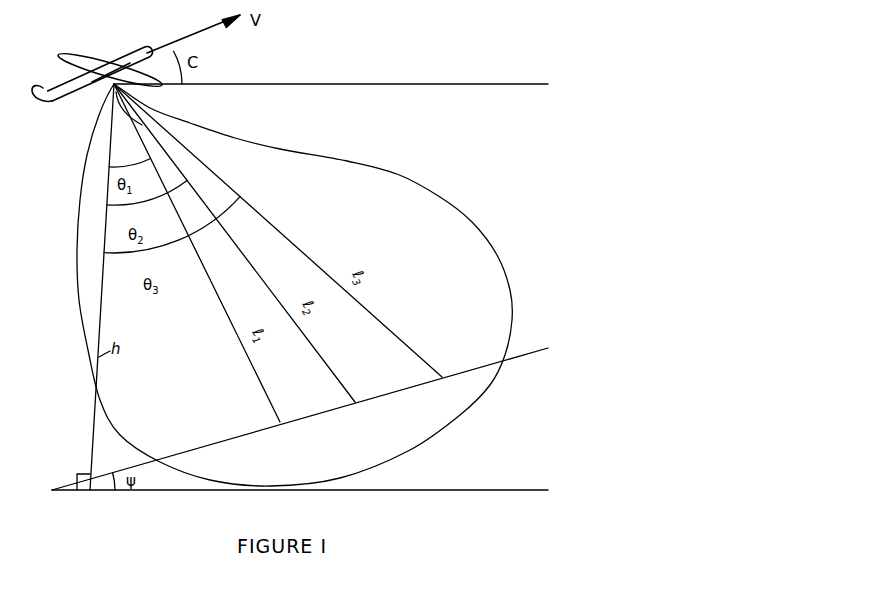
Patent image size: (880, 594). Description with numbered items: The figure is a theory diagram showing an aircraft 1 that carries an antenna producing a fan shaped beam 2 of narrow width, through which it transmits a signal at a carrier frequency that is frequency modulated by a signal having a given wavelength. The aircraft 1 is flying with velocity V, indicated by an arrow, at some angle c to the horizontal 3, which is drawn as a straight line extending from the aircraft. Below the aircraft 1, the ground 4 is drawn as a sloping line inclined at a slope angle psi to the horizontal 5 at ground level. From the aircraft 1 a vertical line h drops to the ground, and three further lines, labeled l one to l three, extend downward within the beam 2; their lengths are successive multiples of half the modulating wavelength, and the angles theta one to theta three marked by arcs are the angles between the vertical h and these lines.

The aircraft 1 is at (57, 52).
The fan shaped beam 2 is at (487, 228).
The horizontal 3 is at (519, 81).
The ground 4 is at (532, 346).
The horizontal 5 is at (524, 487).